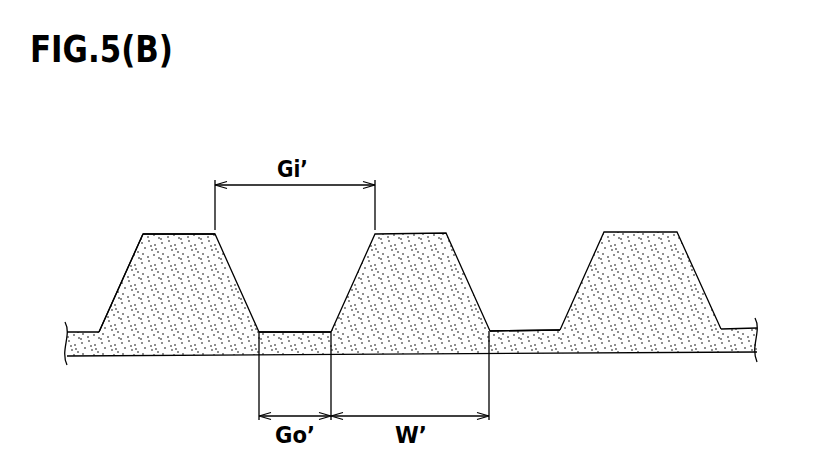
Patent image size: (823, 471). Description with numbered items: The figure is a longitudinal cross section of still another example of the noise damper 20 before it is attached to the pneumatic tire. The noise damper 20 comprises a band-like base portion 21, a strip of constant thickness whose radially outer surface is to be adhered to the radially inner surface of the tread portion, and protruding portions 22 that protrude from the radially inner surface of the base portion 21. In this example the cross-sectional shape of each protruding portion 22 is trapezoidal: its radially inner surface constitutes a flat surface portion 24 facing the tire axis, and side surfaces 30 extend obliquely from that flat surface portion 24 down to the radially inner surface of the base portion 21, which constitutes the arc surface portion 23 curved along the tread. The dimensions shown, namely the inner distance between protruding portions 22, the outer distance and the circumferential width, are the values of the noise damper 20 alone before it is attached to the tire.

The noise damper 20 is at (667, 168).
The base portion 21 is at (528, 338).
The protruding portion 22 is at (657, 282).
The arc surface portion 23 is at (517, 328).
The flat surface portion 24 is at (181, 233).
The side surface 30 is at (120, 283).